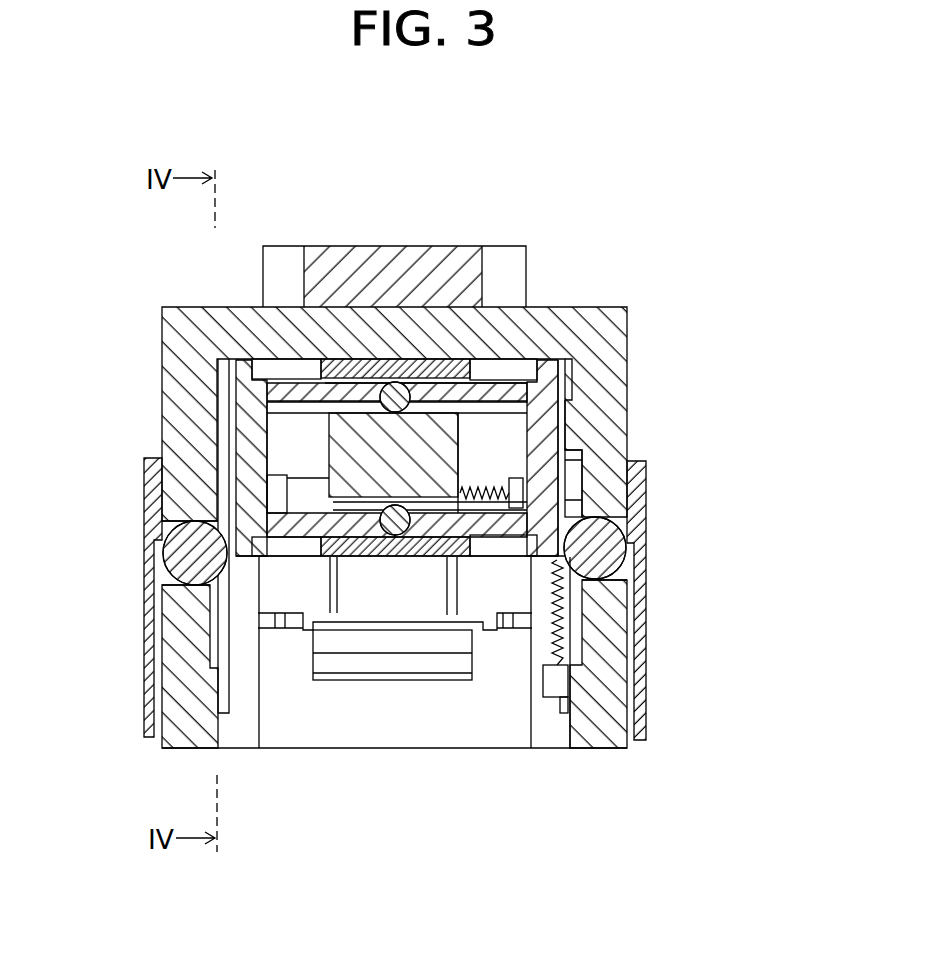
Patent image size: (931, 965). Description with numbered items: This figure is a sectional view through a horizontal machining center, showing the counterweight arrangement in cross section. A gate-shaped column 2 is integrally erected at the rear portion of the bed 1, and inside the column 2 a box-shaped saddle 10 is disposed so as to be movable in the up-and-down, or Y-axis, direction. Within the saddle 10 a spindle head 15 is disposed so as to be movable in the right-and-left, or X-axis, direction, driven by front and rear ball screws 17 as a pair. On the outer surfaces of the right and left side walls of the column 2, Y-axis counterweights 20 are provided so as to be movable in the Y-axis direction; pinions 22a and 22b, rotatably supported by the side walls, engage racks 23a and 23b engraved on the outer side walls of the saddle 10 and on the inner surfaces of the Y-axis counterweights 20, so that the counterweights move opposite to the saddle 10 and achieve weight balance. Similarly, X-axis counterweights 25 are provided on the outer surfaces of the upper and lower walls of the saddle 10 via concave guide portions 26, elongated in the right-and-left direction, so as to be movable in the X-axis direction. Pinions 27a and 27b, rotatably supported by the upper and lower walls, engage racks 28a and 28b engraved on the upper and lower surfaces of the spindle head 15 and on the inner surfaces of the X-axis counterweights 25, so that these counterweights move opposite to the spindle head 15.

The bed 1 is at (345, 717).
The gate-shaped column 2 is at (590, 336).
The box-shaped saddle 10 is at (283, 393).
The spindle head 15 is at (340, 453).
The ball screws 17 is at (497, 393).
The Y-axis counterweights 20 is at (158, 613).
The pinion 22a is at (590, 540).
The pinion 22b is at (190, 542).
The rack 23a is at (228, 405).
The rack 23b is at (162, 632).
The X-axis counterweights 25 is at (392, 383).
The concave guide portions 26 is at (490, 481).
The pinion 27a is at (385, 376).
The pinion 27b is at (386, 540).
The rack 28a is at (345, 418).
The rack 28b is at (457, 385).